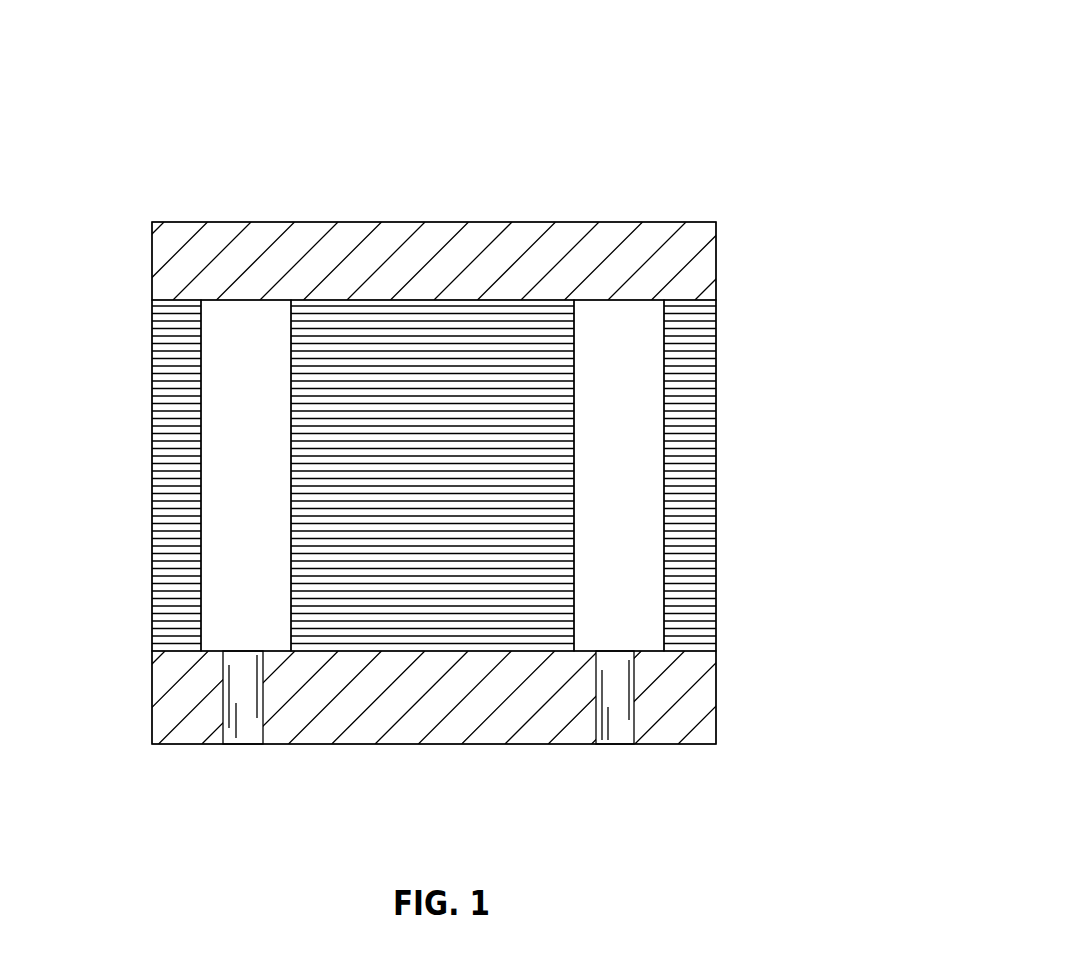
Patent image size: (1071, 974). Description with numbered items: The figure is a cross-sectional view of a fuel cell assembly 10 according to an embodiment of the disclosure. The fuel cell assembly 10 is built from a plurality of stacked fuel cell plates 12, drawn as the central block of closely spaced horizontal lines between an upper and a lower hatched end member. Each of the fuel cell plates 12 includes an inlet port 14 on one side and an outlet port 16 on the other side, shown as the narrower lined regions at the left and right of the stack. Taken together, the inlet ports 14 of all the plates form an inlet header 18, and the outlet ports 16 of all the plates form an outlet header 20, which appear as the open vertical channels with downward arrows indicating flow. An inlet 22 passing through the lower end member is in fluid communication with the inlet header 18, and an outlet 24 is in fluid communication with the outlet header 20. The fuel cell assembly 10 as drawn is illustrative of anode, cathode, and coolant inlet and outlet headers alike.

The fuel cell assembly 10 is at (670, 63).
The fuel cell plates 12 is at (541, 537).
The inlet port 14 is at (197, 513).
The outlet port 16 is at (662, 517).
The inlet header 18 is at (237, 411).
The outlet header 20 is at (623, 411).
The inlet 22 is at (223, 730).
The outlet 24 is at (627, 741).